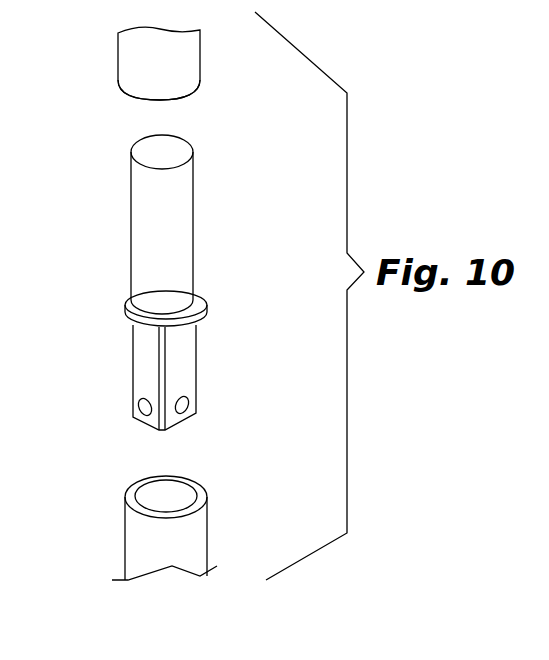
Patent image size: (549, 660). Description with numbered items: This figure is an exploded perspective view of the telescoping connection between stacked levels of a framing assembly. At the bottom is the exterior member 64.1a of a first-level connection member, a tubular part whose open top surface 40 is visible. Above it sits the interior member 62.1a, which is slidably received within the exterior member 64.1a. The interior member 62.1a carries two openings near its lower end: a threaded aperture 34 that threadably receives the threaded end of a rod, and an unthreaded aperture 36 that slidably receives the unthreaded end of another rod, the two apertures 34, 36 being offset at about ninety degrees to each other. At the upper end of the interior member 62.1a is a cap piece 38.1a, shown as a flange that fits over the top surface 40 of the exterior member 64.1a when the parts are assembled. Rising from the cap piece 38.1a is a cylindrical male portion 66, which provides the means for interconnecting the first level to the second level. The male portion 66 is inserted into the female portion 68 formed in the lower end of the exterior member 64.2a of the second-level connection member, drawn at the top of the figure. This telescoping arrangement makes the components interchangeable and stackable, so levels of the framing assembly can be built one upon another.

The female portion 68 is at (148, 99).
The exterior member 64.2a is at (178, 67).
The male portion 66 is at (175, 243).
The interior member 62.1a is at (219, 287).
The cap piece 38.1a is at (128, 303).
The threaded aperture 34 is at (139, 408).
The unthreaded aperture 36 is at (186, 400).
The top surface 40 is at (198, 492).
The exterior member 64.1a is at (220, 527).